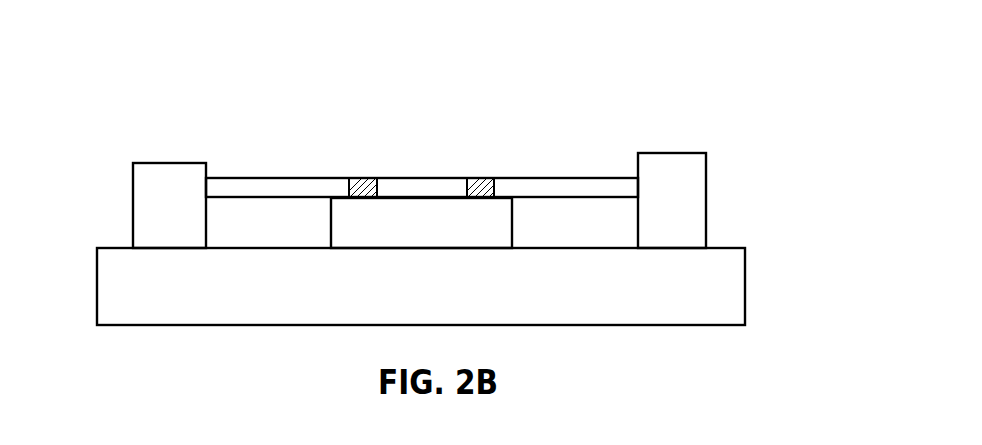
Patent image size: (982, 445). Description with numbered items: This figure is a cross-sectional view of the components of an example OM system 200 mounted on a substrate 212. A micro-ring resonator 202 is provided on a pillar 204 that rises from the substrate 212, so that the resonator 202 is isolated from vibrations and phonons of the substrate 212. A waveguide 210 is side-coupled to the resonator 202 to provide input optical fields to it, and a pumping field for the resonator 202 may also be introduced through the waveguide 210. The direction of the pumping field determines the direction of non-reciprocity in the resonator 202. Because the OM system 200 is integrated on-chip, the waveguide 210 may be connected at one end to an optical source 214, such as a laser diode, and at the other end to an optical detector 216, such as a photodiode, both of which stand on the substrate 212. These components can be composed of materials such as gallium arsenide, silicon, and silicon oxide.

The OM system 200 is at (580, 95).
The micro-ring resonator 202 is at (468, 175).
The pillar 204 is at (500, 237).
The waveguide 210 is at (260, 177).
The substrate 212 is at (747, 285).
The optical source 214 is at (143, 203).
The optical detector 216 is at (690, 212).